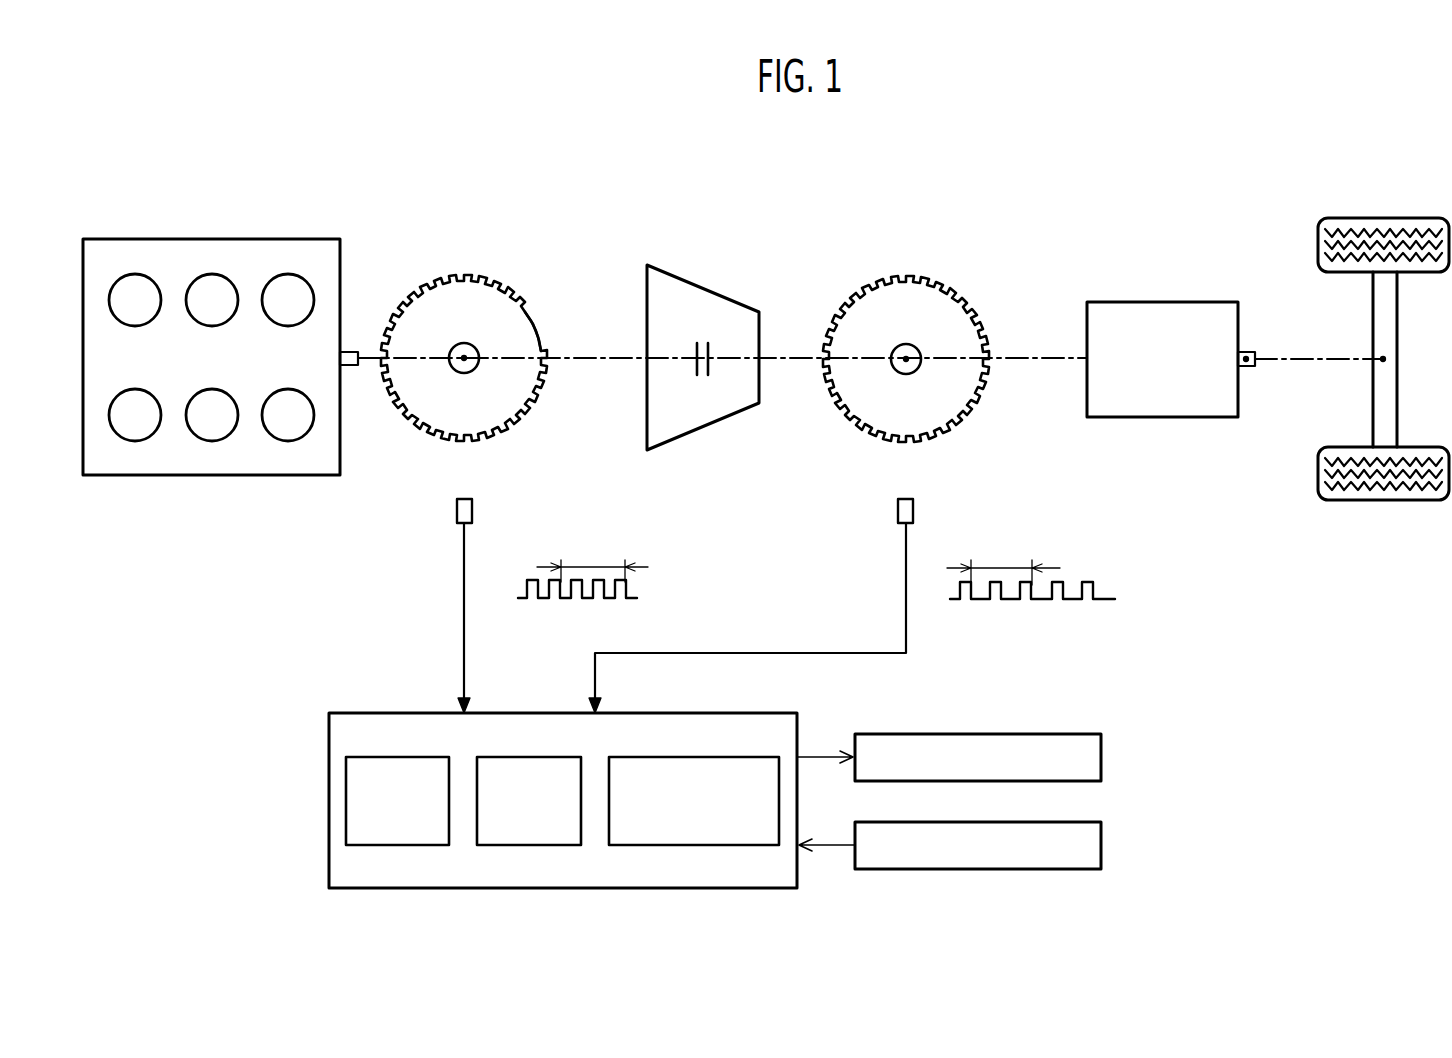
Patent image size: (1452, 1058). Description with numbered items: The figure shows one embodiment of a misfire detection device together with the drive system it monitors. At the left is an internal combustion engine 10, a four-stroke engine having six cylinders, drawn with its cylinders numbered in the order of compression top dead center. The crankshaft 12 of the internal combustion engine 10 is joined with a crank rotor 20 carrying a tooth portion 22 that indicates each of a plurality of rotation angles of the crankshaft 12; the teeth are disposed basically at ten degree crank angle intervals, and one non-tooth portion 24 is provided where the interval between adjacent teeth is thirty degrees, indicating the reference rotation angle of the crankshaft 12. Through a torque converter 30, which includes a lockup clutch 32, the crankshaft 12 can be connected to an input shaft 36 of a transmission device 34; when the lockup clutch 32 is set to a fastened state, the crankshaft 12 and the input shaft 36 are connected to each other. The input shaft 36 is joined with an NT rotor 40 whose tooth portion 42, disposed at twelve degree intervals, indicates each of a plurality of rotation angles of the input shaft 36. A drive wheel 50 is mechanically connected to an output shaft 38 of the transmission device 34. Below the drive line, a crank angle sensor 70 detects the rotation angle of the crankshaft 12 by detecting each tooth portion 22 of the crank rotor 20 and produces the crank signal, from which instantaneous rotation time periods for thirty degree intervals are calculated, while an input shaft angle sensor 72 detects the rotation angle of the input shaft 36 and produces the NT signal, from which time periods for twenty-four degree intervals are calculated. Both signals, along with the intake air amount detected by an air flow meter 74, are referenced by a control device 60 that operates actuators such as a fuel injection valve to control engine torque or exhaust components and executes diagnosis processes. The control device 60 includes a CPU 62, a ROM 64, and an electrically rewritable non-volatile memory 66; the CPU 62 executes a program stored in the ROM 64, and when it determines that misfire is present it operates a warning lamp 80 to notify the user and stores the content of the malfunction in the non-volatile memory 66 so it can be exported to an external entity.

The internal combustion engine 10 is at (303, 215).
The crankshaft 12 is at (464, 343).
The crank rotor 20 is at (486, 322).
The tooth portion 22 is at (530, 299).
The non-tooth portion 24 is at (540, 324).
The torque converter 30 is at (703, 344).
The lockup clutch 32 is at (711, 352).
The transmission device 34 is at (1162, 300).
The input shaft 36 is at (906, 344).
The output shaft 38 is at (1250, 350).
The NT rotor 40 is at (925, 322).
The tooth portion 42 is at (972, 300).
The drive wheel 50 is at (1383, 216).
The control device 60 is at (563, 783).
The CPU 62 is at (393, 757).
The ROM 64 is at (523, 757).
The non-volatile memory 66 is at (722, 757).
The crank angle sensor 70 is at (472, 511).
The input shaft angle sensor 72 is at (913, 511).
The air flow meter 74 is at (1101, 846).
The warning lamp 80 is at (1101, 758).